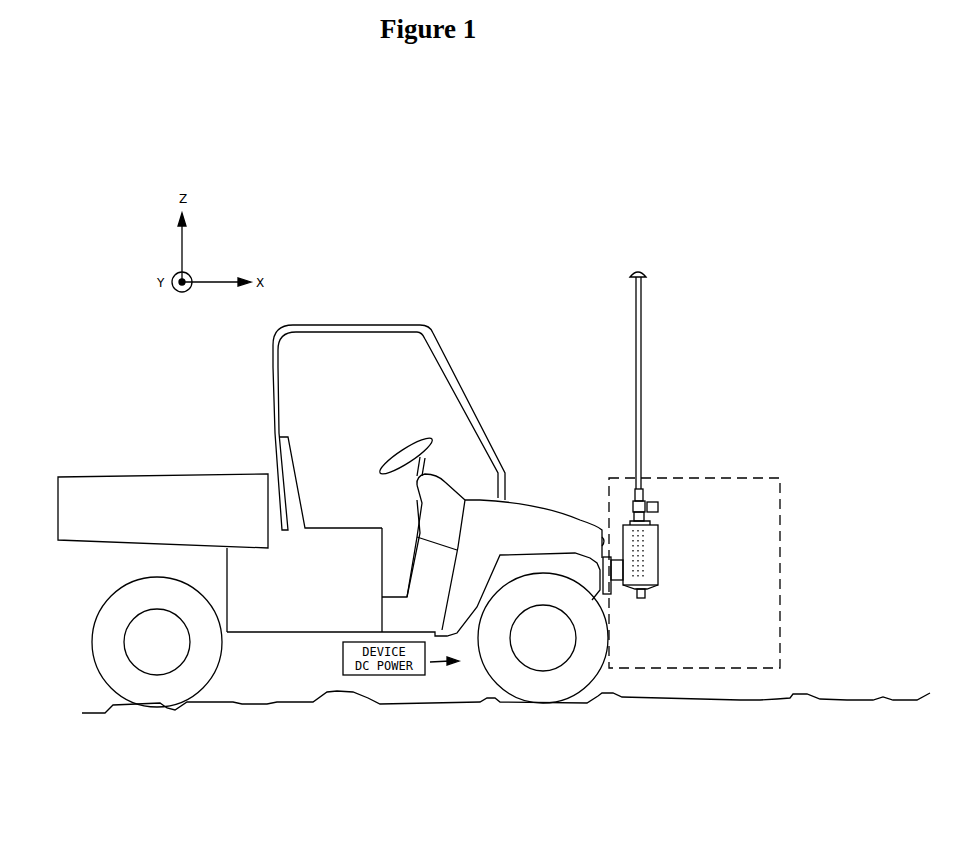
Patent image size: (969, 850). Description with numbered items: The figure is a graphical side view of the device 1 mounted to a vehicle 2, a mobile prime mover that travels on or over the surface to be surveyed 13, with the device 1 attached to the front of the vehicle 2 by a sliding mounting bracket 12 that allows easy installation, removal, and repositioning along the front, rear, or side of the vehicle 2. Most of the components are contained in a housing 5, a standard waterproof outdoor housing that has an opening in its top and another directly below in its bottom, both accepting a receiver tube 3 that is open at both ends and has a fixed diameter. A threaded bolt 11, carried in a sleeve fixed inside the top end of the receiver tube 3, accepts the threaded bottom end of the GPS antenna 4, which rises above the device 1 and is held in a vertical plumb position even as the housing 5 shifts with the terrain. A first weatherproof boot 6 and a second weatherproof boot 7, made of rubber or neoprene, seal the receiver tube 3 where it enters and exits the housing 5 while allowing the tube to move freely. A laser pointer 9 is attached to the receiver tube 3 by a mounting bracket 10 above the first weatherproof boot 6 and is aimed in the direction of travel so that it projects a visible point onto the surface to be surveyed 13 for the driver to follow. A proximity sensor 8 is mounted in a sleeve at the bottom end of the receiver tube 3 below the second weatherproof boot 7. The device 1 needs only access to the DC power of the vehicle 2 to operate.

The device 1 is at (745, 478).
The vehicle 2 is at (160, 474).
The receiver tube 3 is at (647, 498).
The GPS antenna 4 is at (635, 297).
The housing 5 is at (658, 545).
The first weatherproof boot 6 is at (650, 523).
The second weatherproof boot 7 is at (647, 588).
The proximity sensor 8 is at (645, 597).
The laser pointer 9 is at (658, 504).
The mounting bracket 10 is at (634, 503).
The threaded bolt 11 is at (641, 490).
The sliding mounting bracket 12 is at (615, 572).
The surface to be surveyed 13 is at (777, 699).